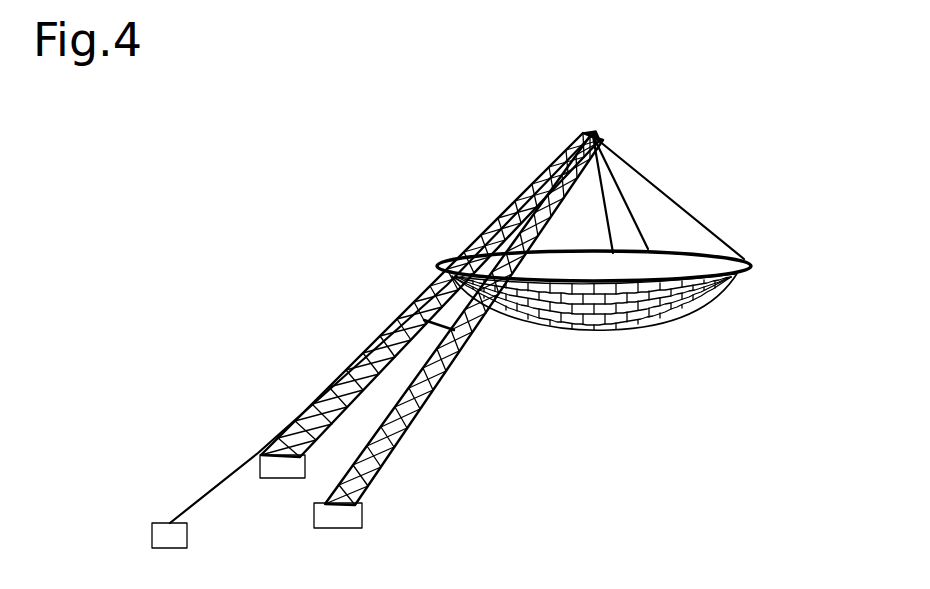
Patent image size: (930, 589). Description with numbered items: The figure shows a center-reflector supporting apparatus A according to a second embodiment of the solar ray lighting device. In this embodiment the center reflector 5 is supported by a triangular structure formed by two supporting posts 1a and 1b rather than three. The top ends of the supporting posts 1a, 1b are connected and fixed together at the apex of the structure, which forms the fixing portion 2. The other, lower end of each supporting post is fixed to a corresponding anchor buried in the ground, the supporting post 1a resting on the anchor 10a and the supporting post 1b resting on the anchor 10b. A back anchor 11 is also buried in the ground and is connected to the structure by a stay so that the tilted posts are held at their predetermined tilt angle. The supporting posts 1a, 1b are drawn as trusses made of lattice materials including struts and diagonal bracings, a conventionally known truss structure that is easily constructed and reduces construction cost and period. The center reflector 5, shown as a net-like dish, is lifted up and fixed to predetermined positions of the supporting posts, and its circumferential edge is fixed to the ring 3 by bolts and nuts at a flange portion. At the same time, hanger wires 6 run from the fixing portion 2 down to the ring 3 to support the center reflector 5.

The center-reflector supporting apparatus A is at (362, 117).
The supporting post 1a is at (430, 385).
The supporting post 1b is at (500, 220).
The fixing portion 2 is at (578, 127).
The ring 3 is at (751, 268).
The center reflector 5 is at (618, 345).
The hanger wires 6 is at (665, 187).
The anchor 10a is at (362, 515).
The anchor 10b is at (290, 481).
The back anchor 11 is at (238, 469).